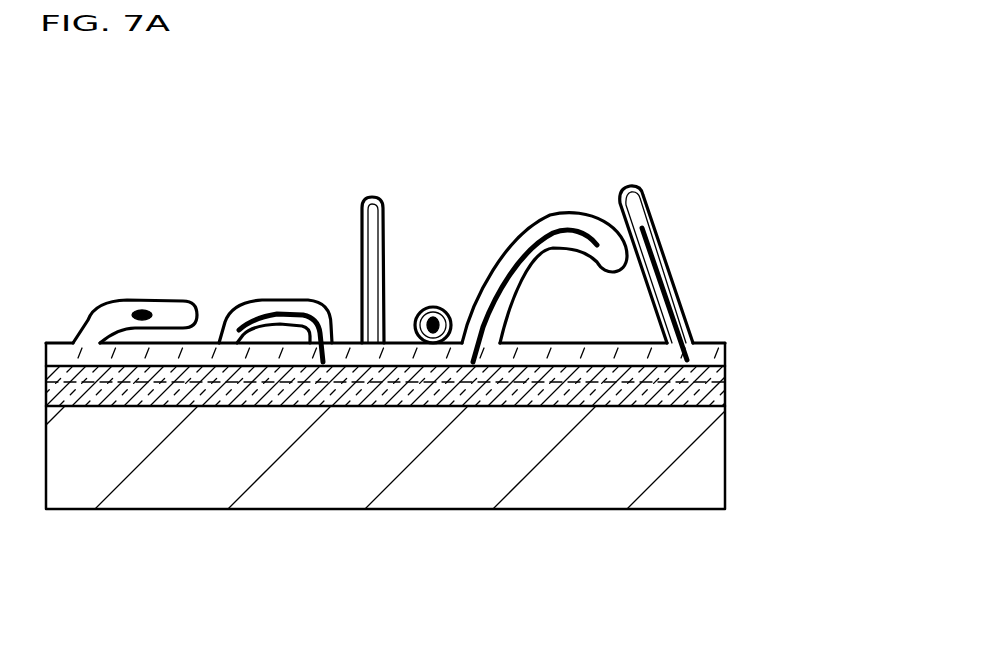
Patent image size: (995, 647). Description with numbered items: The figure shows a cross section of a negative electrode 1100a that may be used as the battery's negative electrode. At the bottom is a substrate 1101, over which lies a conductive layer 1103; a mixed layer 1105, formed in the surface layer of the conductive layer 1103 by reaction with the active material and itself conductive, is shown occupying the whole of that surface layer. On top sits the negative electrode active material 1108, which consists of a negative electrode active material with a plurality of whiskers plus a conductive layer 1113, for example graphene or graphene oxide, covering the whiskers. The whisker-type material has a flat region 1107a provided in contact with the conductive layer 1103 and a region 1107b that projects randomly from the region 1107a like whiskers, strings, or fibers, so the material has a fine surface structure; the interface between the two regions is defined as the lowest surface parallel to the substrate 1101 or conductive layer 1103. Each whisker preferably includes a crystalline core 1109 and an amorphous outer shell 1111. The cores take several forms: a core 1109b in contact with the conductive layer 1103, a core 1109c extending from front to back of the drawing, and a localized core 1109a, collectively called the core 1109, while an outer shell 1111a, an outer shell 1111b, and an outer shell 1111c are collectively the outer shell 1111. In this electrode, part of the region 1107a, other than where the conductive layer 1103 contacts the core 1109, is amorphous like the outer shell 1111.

The negative electrode 1100a is at (116, 91).
The substrate 1101 is at (62, 483).
The conductive layer 1103 is at (726, 366).
The mixed layer 1105 is at (132, 373).
The region 1107a is at (726, 342).
The region 1107b is at (442, 370).
The negative electrode active material 1108 is at (465, 370).
The core 1109 is at (285, 467).
The core 1109a is at (145, 322).
The core 1109b is at (270, 327).
The core 1109c is at (431, 333).
The outer shell 1111 is at (265, 229).
The outer shell 1111a is at (173, 312).
The outer shell 1111b is at (270, 300).
The outer shell 1111c is at (419, 250).
The conductive layer 1113 is at (360, 213).